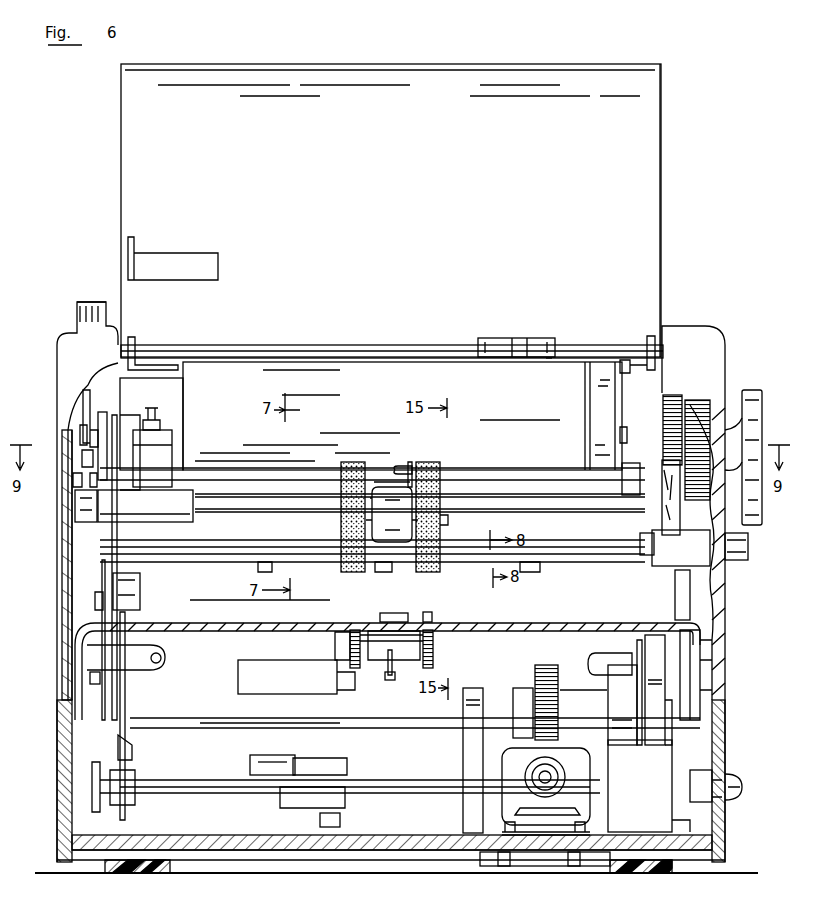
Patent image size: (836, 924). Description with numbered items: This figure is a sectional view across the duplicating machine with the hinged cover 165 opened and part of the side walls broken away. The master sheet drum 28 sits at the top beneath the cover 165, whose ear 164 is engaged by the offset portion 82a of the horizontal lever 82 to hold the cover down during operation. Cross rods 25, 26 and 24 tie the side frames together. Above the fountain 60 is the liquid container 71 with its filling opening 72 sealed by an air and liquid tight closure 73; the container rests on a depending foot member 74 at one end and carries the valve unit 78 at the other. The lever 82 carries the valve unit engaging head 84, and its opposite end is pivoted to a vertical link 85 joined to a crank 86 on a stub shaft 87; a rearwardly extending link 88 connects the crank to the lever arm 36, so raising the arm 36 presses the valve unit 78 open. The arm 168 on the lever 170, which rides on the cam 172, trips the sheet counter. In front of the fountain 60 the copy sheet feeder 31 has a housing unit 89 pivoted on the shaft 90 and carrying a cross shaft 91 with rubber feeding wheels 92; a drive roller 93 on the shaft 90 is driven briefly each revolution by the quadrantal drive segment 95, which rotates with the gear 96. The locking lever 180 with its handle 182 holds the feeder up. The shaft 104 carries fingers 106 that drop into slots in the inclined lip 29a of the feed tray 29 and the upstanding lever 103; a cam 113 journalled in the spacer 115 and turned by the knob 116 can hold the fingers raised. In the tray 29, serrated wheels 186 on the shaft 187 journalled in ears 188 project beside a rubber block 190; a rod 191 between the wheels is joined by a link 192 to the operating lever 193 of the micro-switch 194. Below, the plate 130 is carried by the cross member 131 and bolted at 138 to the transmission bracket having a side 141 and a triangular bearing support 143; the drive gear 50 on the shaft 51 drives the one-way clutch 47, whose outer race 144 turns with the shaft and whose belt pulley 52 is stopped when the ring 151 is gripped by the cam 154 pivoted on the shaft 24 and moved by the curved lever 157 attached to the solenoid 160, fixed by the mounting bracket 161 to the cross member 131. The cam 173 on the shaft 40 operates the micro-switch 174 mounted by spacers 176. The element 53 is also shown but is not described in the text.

The ear 164 is at (137, 246).
The hinged cover 165 is at (385, 221).
The arm 168 is at (90, 390).
The cross rod 25 is at (378, 332).
The air and liquid tight closure 73 is at (549, 338).
The filling opening 72 is at (550, 360).
The container 71 is at (398, 403).
The master sheet drum 28 is at (183, 400).
The horizontal lever 82 is at (104, 412).
The offset portion 82a is at (128, 418).
The valve unit engaging head 84 is at (162, 422).
The valve unit 78 is at (157, 490).
The lever 170 is at (86, 445).
The cam 172 is at (88, 462).
The upstanding lever 103 is at (76, 522).
The vertical link 85 is at (112, 510).
The copy sheet feeder 31 is at (460, 484).
The shaft 90 is at (535, 494).
The fountain 60 is at (290, 539).
The shaft 104 is at (236, 548).
The sheet feeding rubber wheels 92 is at (340, 541).
The cross shaft 91 is at (448, 532).
The housing unit 89 is at (392, 512).
The handle 182 is at (412, 450).
The locking lever 180 is at (412, 468).
The depending foot member 74 is at (622, 487).
The fingers 106 is at (262, 572).
The quadrantal drive segment 95 is at (663, 410).
The gear 96 is at (695, 420).
The drive roller 93 is at (668, 522).
The cam 113 is at (654, 544).
The spacer 115 is at (695, 559).
The turning knob 116 is at (736, 560).
The plate 53 is at (682, 598).
The copy sheet feed tray 29 is at (232, 630).
The inclined ramp 29a is at (318, 609).
The crank 86 is at (105, 640).
The stub shaft 87 is at (94, 684).
The lever arms 36 is at (125, 694).
The cross rod 26 is at (222, 712).
The rearwardly extending link 88 is at (134, 750).
The shaft 40 is at (240, 793).
The micro-switch 194 is at (278, 688).
The operating lever 193 is at (345, 680).
The rubber block 190 is at (398, 622).
The shaft 187 is at (428, 630).
The serrated wheels 186 is at (433, 665).
The ears 188 is at (440, 641).
The rod 191 is at (408, 655).
The link 192 is at (390, 680).
The shaft 51 is at (510, 706).
The triangular bearing support 143 is at (468, 755).
The cross rod 24 is at (590, 658).
The drive gear 50 is at (558, 682).
The clutch 47 is at (600, 693).
The outer race 144 is at (636, 709).
The curved lever 157 is at (638, 645).
The cam 154 is at (660, 690).
The ring 151 is at (660, 730).
The solenoid 160 is at (655, 785).
The mounting bracket 161 is at (628, 832).
The belt pulley 52 is at (692, 760).
The side 141 is at (530, 809).
The rectangular plate 130 is at (556, 866).
The bolt 138 is at (505, 866).
The cross member 131 is at (458, 848).
The cam 173 is at (272, 756).
The micro-switch 174 is at (335, 775).
The spacers 176 is at (320, 823).